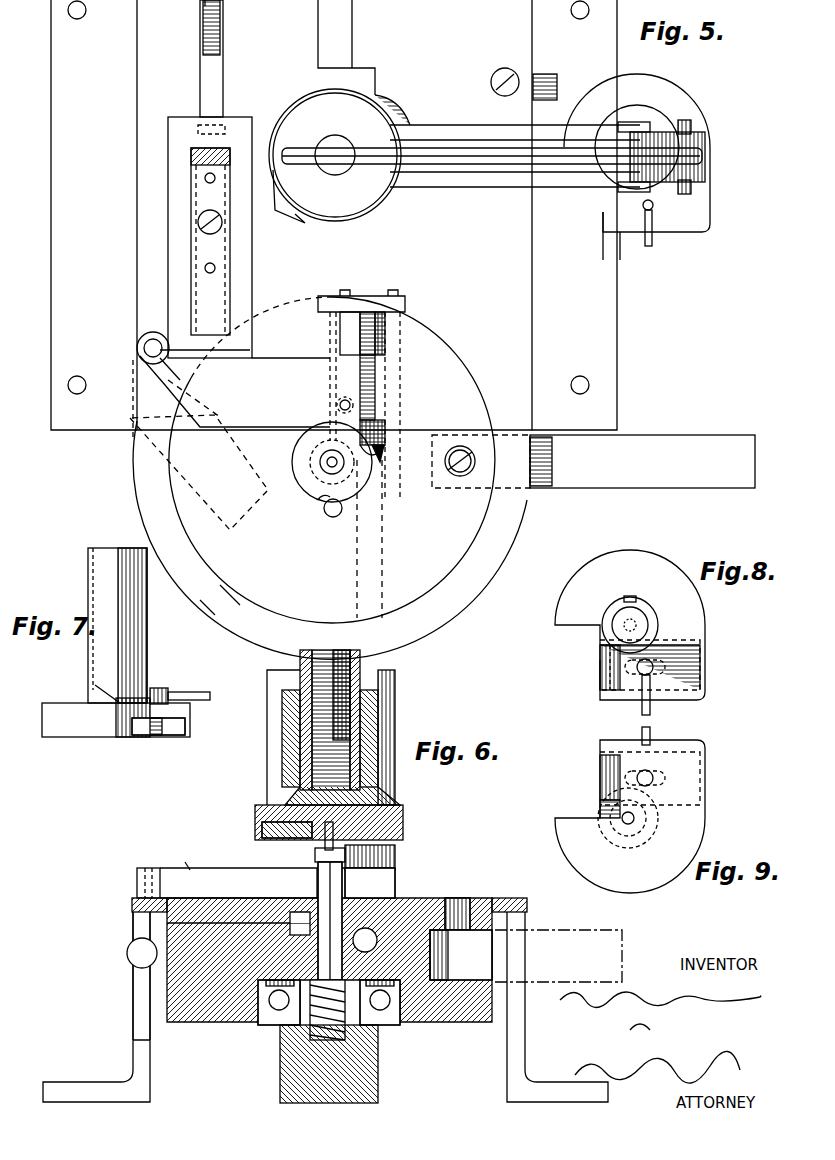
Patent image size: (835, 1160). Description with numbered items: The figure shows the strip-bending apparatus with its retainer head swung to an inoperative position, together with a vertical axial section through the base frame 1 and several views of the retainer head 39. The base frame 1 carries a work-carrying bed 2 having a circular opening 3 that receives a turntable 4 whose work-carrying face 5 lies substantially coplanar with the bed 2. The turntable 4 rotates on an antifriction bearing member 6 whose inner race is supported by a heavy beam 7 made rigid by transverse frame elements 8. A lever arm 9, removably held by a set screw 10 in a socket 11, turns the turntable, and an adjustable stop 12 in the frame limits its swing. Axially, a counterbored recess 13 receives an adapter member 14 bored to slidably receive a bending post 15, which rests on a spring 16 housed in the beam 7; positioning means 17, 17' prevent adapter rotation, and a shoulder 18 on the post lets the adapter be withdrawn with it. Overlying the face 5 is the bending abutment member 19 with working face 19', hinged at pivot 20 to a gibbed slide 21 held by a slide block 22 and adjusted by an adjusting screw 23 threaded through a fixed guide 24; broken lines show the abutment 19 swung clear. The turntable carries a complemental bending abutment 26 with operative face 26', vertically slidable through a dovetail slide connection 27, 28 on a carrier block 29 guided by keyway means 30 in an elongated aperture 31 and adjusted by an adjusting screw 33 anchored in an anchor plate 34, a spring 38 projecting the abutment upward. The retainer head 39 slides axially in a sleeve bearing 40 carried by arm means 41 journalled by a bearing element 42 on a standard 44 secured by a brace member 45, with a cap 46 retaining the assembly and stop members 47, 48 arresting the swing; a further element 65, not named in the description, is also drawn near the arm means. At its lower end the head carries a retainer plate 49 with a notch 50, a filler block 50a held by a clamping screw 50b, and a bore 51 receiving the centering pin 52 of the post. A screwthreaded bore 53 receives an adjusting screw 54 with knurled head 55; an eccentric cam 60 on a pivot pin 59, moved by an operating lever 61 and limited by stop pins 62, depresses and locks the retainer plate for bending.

In FIG. 5, the base frame 1 is at (56, 312).
In FIG. 6, the base frame 1 is at (133, 1050).
In FIG. 5, the work-carrying bed 2 is at (137, 275).
In FIG. 6, the work-carrying bed 2 is at (522, 898).
In FIG. 5, the circular opening 3 is at (195, 575).
In FIG. 5, the turntable 4 is at (245, 605).
In FIG. 6, the turntable 4 is at (210, 1022).
In FIG. 5, the work-carrying face 5 is at (210, 608).
In FIG. 6, the work-carrying face 5 is at (190, 898).
In FIG. 6, the antifriction bearing member 6 is at (268, 1025).
In FIG. 6, the beam 7 is at (282, 1070).
In FIG. 6, the transverse frame elements 8 is at (150, 998).
In FIG. 5, the lever arm 9 is at (598, 488).
In FIG. 6, the lever arm 9 is at (560, 930).
In FIG. 5, the set screw 10 is at (461, 448).
In FIG. 6, the set screw 10 is at (462, 898).
In FIG. 5, the socket 11 is at (450, 490).
In FIG. 6, the socket 11 is at (465, 980).
In FIG. 6, the adjustable stop 12 is at (127, 953).
In FIG. 6, the counterbored recess 13 is at (300, 920).
In FIG. 5, the adapter member 14 is at (294, 452).
In FIG. 6, the adapter member 14 is at (360, 898).
In FIG. 5, the bending post 15 is at (326, 468).
In FIG. 6, the bending post 15 is at (318, 885).
In FIG. 6, the spring 16 is at (345, 1030).
In FIG. 5, the positioning means 17 is at (325, 517).
In FIG. 5, the positioning means 17' is at (309, 510).
In FIG. 6, the shoulder 18 is at (288, 915).
In FIG. 5, the bending abutment member 19 is at (235, 382).
In FIG. 6, the bending abutment member 19 is at (277, 870).
In FIG. 5, the working face 19' is at (203, 455).
In FIG. 6, the working face 19' is at (181, 856).
In FIG. 5, the hinge pivot 20 is at (137, 348).
In FIG. 6, the hinge pivot 20 is at (137, 886).
In FIG. 5, the gibbed slide 21 is at (168, 230).
In FIG. 5, the slide block 22 is at (196, 196).
In FIG. 5, the adjusting screw 23 is at (223, 42).
In FIG. 5, the fixed guide 24 is at (198, 14).
In FIG. 5, the bending abutment 26 is at (395, 430).
In FIG. 5, the operative face 26' is at (396, 447).
In FIG. 6, the operative face 26' is at (403, 857).
In FIG. 5, the dovetail slide connection 27 is at (390, 405).
In FIG. 5, the dovetail slide connection 28 is at (385, 386).
In FIG. 5, the carrier block 29 is at (385, 366).
In FIG. 5, the keyway means 30 is at (340, 345).
In FIG. 5, the elongated aperture 31 is at (380, 320).
In FIG. 5, the adjusting screw 33 is at (382, 462).
In FIG. 6, the adjusting screw 33 is at (375, 920).
In FIG. 5, the anchor plate 34 is at (350, 290).
In FIG. 5, the spring 38 is at (337, 405).
In FIG. 7, the retainer head 39 is at (88, 663).
In FIG. 9, the retainer head 39 is at (660, 822).
In FIG. 6, the sleeve bearing 40 is at (282, 737).
In FIG. 5, the arm means 41 is at (458, 150).
In FIG. 5, the bearing element 42 is at (382, 210).
In FIG. 6, the standard 44 is at (267, 693).
In FIG. 5, the brace member 45 is at (352, 52).
In FIG. 5, the cap 46 is at (312, 104).
In FIG. 5, the stop member 47 is at (290, 225).
In FIG. 5, the stop member 48 is at (398, 105).
In FIG. 5, the retainer plate 49 is at (676, 100).
In FIG. 6, the retainer plate 49 is at (403, 816).
In FIG. 7, the retainer plate 49 is at (60, 740).
In FIG. 8, the retainer plate 49 is at (572, 584).
In FIG. 9, the retainer plate 49 is at (572, 846).
In FIG. 7, the notch 50 is at (118, 740).
In FIG. 8, the notch 50 is at (592, 646).
In FIG. 9, the notch 50 is at (589, 792).
In FIG. 5, the filler block 50a is at (608, 232).
In FIG. 6, the filler block 50a is at (262, 828).
In FIG. 7, the filler block 50a is at (148, 738).
In FIG. 8, the filler block 50a is at (600, 678).
In FIG. 9, the filler block 50a is at (600, 767).
In FIG. 5, the clamping screw 50b is at (655, 212).
In FIG. 7, the clamping screw 50b is at (162, 712).
In FIG. 8, the clamping screw 50b is at (640, 676).
In FIG. 9, the clamping screw 50b is at (648, 776).
In FIG. 6, the bore 51 is at (326, 840).
In FIG. 8, the bore 51 is at (648, 608).
In FIG. 9, the bore 51 is at (632, 822).
In FIG. 5, the centering pin 52 is at (322, 464).
In FIG. 6, the centering pin 52 is at (345, 855).
In FIG. 6, the screwthreaded bore 53 is at (312, 775).
In FIG. 7, the screwthreaded bore 53 is at (132, 648).
In FIG. 6, the adjusting screw 54 is at (312, 660).
In FIG. 5, the knurled head 55 is at (604, 196).
In FIG. 5, the pivot pin 59 is at (628, 122).
In FIG. 5, the eccentric cam 60 is at (705, 157).
In FIG. 5, the operating lever 61 is at (426, 138).
In FIG. 5, the stop pins 62 is at (691, 127).
In FIG. 5, the screw 65 is at (492, 74).